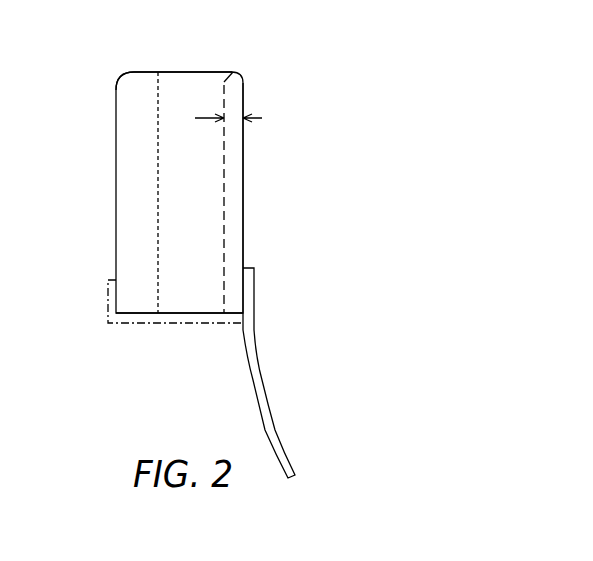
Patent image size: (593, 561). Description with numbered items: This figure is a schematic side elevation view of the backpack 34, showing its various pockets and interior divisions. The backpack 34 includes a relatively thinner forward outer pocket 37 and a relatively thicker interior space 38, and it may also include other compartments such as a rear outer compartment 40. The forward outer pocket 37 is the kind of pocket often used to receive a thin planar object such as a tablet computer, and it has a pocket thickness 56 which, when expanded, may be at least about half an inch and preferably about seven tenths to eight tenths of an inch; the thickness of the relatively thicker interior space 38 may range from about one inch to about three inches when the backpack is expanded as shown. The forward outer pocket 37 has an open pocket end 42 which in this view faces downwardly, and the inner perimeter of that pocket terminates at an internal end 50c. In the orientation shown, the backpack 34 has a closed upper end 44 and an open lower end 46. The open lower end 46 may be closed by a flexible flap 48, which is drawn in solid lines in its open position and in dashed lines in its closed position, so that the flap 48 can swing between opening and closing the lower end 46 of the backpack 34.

The backpack 34 is at (254, 46).
The closed upper end 44 is at (141, 72).
The internal end 50c is at (227, 77).
The rear outer compartment 40 is at (150, 202).
The interior space 38 is at (206, 211).
The pocket thickness 56 is at (262, 118).
The forward outer pocket 37 is at (233, 190).
The open pocket end 42 is at (233, 300).
The flexible flap 48 is at (256, 385).
The open lower end 46 is at (126, 346).